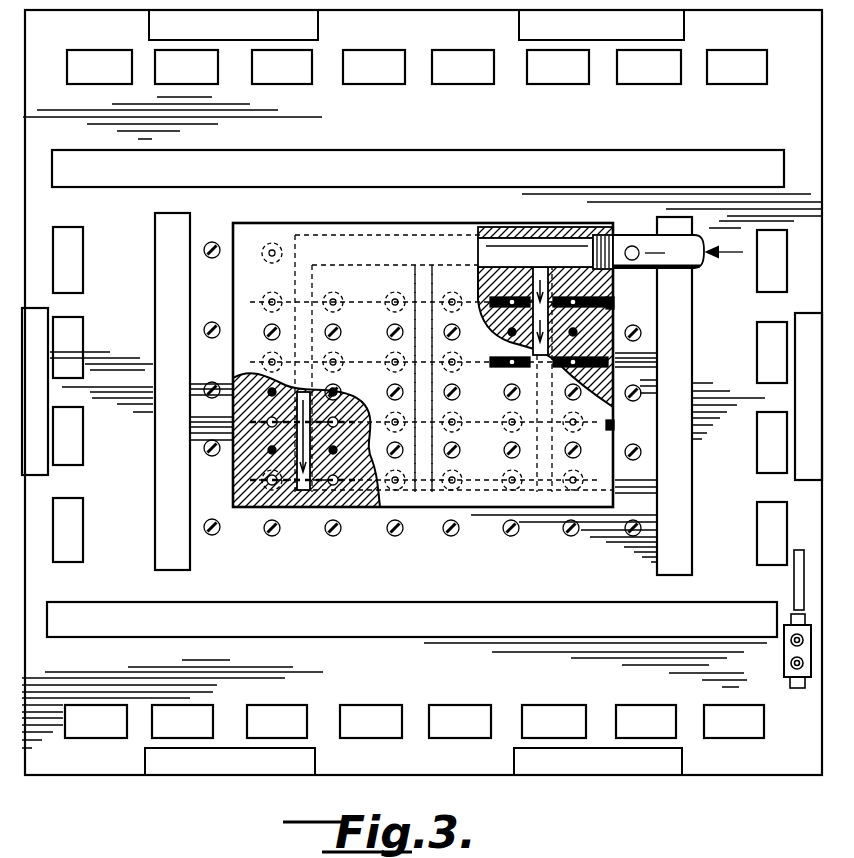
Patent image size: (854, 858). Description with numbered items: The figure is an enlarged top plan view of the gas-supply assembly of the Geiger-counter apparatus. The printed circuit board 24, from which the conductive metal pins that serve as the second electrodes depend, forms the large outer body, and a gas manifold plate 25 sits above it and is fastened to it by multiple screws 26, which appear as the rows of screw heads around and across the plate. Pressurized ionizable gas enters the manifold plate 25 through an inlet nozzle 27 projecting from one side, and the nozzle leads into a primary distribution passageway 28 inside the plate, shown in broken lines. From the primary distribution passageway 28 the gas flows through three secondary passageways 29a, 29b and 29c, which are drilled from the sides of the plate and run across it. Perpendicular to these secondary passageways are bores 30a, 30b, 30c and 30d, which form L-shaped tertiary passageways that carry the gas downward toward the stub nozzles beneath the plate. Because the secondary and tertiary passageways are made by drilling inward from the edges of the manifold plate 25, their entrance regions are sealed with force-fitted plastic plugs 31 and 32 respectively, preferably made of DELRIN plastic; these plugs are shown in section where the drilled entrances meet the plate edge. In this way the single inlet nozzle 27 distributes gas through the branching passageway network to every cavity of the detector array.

The printed circuit board 24 is at (754, 767).
The gas manifold plate 25 is at (258, 222).
The screws 26 is at (502, 443).
The inlet nozzle 27 is at (675, 275).
The primary distribution passageway 28 is at (363, 248).
The first secondary passageway 29a is at (303, 500).
The second secondary passageway 29b is at (422, 502).
The third secondary passageway 29c is at (541, 500).
The tertiary passageway bore 30a is at (287, 293).
The tertiary passageway bore 30b is at (287, 354).
The tertiary passageway bore 30c is at (338, 402).
The tertiary passageway bore 30d is at (247, 478).
The plastic plugs 31 is at (431, 240).
The plastic plugs 32 is at (616, 306).